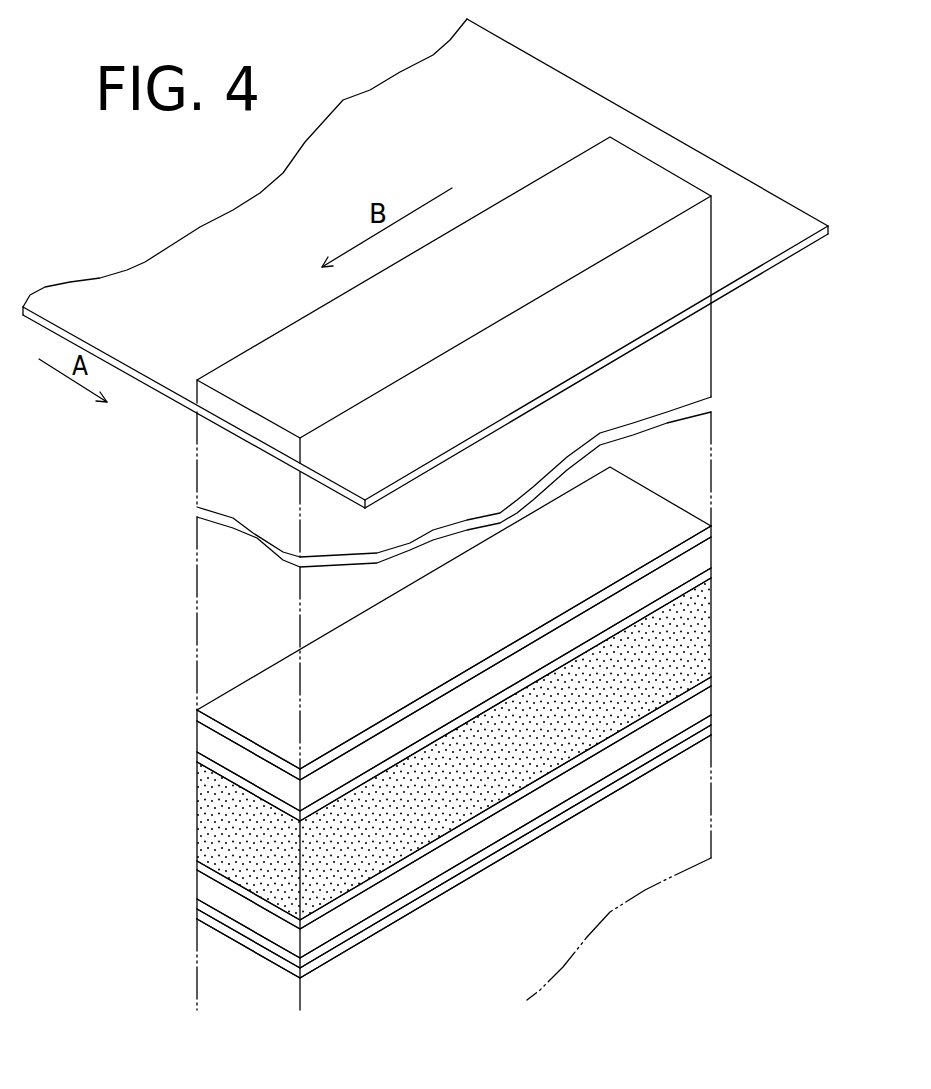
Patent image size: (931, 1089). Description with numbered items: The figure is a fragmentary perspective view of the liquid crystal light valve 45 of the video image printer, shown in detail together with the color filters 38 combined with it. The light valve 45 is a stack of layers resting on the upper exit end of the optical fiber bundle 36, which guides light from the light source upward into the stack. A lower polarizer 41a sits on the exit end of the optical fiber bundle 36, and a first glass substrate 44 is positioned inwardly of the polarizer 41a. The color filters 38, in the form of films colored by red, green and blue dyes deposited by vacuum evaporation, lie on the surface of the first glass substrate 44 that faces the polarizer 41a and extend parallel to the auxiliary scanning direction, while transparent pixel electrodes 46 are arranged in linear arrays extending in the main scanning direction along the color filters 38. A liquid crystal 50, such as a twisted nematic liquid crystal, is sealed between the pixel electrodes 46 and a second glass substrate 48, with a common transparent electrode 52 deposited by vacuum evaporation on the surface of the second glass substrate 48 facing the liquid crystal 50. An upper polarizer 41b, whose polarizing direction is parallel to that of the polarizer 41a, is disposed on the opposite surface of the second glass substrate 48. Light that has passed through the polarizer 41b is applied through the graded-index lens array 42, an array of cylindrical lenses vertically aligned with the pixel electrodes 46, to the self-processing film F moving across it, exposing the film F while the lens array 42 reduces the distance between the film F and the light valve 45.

The self-processing film F is at (690, 163).
The graded-index lens array 42 is at (703, 340).
The liquid crystal light valve 45 is at (160, 832).
The polarizer 41b is at (703, 535).
The second glass substrate 48 is at (703, 563).
The common transparent electrode 52 is at (712, 583).
The liquid crystal 50 is at (703, 618).
The pixel electrodes 46 is at (703, 683).
The first glass substrate 44 is at (703, 707).
The color filters 38 is at (713, 727).
The polarizer 41a is at (692, 743).
The optical fiber bundle 36 is at (703, 820).